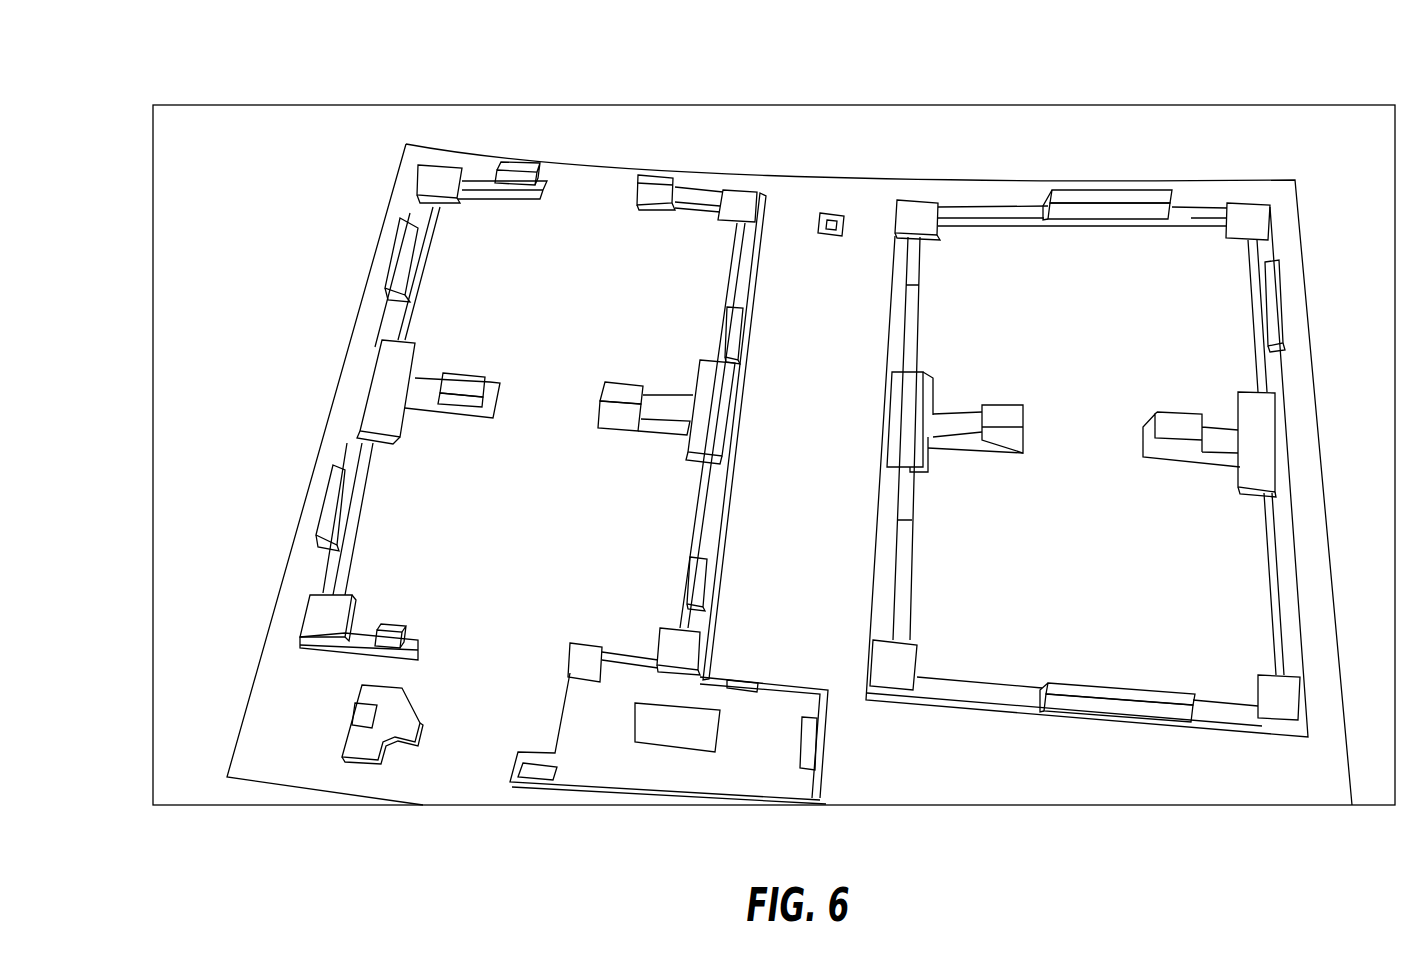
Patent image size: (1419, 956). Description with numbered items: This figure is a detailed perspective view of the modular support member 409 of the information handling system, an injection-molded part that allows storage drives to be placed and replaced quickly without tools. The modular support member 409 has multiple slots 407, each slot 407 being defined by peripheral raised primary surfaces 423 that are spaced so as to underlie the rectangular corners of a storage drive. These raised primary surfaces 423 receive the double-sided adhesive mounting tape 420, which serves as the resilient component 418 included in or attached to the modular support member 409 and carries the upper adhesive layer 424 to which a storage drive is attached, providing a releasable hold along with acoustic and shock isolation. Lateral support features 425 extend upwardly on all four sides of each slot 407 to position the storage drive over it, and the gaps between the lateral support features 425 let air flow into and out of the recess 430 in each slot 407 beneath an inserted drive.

The slot 407 is at (568, 243).
The modular support member 409 is at (280, 723).
The resilient component 418 is at (745, 215).
The double-sided adhesive mounting tape 420 is at (440, 177).
The peripheral raised primary surface 423 is at (742, 275).
The upper adhesive layer 424 is at (390, 377).
The lateral support feature 425 is at (417, 253).
The recess 430 is at (490, 503).